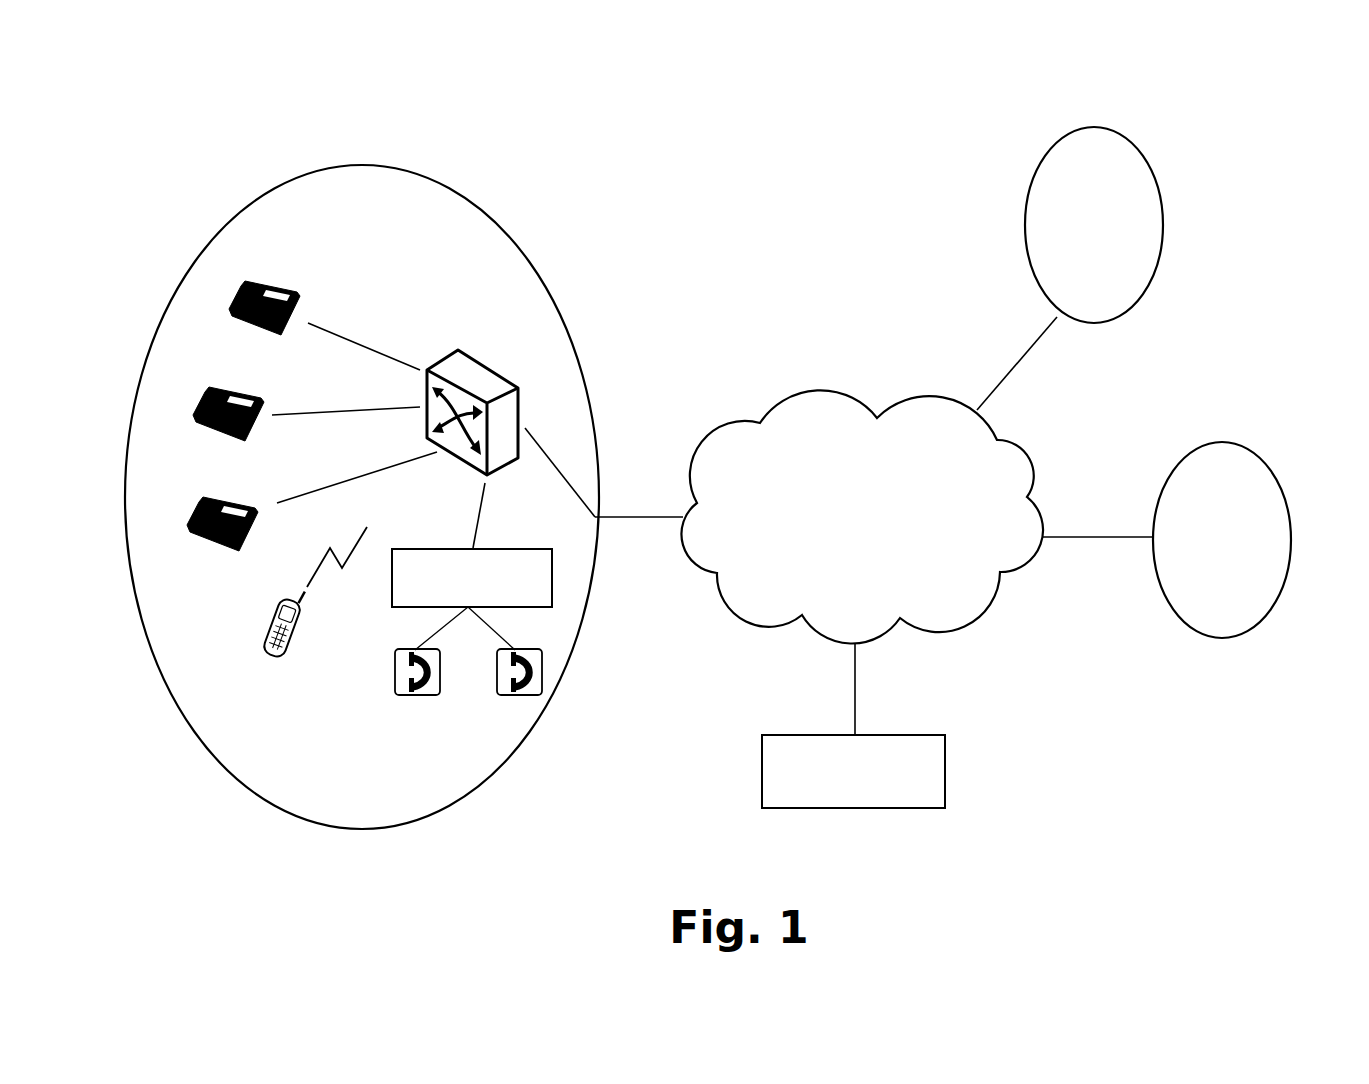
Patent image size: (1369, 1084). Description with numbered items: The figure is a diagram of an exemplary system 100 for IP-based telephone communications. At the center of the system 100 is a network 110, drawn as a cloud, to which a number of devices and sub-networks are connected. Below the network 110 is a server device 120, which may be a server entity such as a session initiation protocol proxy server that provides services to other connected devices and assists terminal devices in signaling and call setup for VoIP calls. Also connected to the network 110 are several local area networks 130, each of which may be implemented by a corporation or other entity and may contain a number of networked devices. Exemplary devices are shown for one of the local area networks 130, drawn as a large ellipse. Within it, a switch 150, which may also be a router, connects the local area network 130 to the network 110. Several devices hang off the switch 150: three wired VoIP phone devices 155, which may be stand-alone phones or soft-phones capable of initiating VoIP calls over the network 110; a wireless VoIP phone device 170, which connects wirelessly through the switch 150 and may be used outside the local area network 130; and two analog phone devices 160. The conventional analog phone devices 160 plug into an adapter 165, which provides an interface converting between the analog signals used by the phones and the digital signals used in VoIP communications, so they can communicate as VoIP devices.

The system 100 is at (193, 96).
The network 110 is at (1057, 443).
The server device 120 is at (945, 735).
The local area network 130 is at (487, 183).
The switch 150 is at (520, 361).
The wired VoIP phone device 155 is at (308, 292).
The analog phone device 160 is at (403, 700).
The adapter 165 is at (536, 532).
The wireless VoIP phone device 170 is at (270, 663).